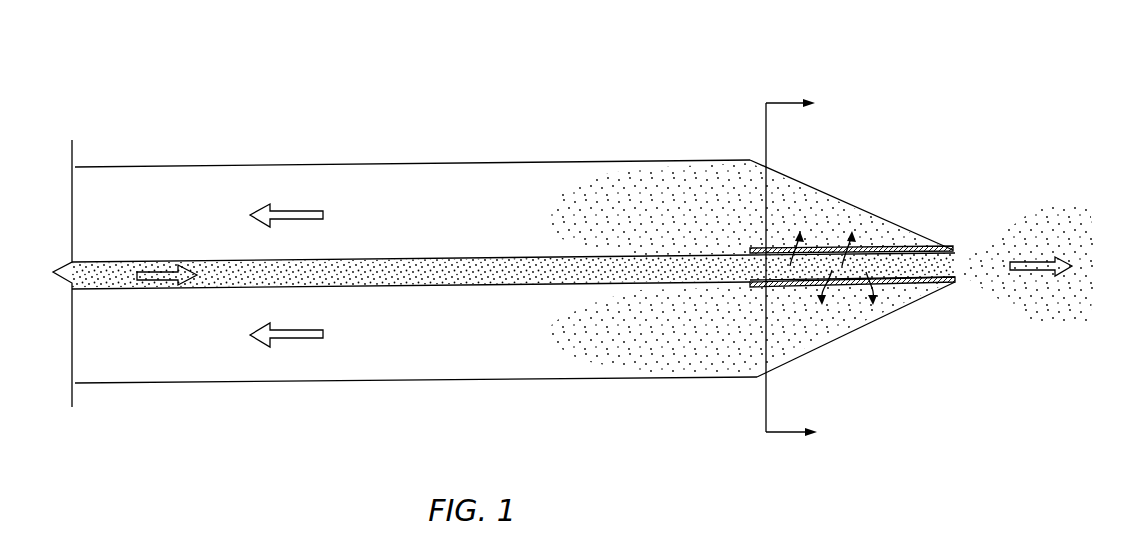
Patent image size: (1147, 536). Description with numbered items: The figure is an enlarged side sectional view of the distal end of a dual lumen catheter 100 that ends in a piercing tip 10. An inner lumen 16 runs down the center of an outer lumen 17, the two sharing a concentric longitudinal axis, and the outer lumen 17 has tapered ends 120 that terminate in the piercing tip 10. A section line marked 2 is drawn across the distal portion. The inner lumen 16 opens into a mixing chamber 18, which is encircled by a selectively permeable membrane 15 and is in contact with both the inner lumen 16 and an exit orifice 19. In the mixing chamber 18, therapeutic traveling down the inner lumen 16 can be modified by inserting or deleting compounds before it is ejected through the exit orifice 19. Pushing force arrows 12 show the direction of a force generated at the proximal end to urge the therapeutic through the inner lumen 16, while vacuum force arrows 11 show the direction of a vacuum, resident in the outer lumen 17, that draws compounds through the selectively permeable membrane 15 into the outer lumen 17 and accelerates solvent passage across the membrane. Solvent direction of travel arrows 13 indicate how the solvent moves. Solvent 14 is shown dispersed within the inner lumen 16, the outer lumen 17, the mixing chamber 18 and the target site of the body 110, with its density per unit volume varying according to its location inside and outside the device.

The dual lumen catheter 100 is at (575, 108).
The section line of FIG. 2 is at (791, 267).
The piercing tip 10 is at (948, 247).
The vacuum force arrows 11 is at (279, 338).
The pushing force arrows 12 is at (172, 262).
The solvent direction of travel arrows 13 is at (884, 289).
The solvent 14 is at (493, 262).
The selectively permeable membrane 15 is at (873, 246).
The inner lumen 16 is at (418, 289).
The outer lumen 17 is at (347, 166).
The mixing chamber 18 is at (842, 270).
The exit orifice 19 is at (950, 263).
The target site of the body 110 is at (1132, 275).
The tapered ends 120 is at (827, 195).